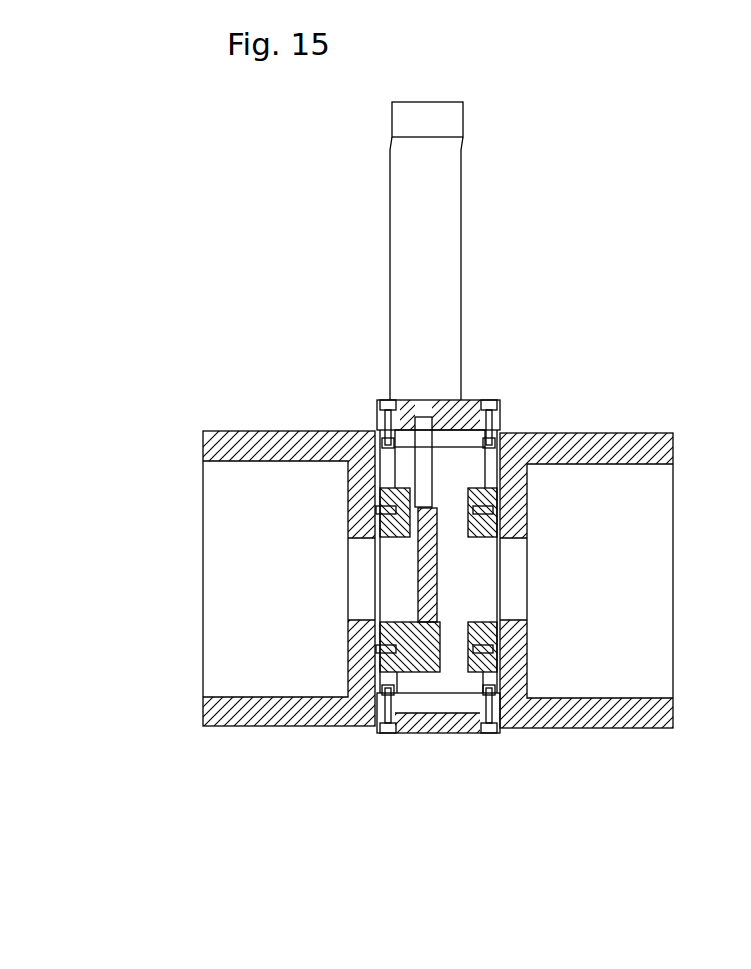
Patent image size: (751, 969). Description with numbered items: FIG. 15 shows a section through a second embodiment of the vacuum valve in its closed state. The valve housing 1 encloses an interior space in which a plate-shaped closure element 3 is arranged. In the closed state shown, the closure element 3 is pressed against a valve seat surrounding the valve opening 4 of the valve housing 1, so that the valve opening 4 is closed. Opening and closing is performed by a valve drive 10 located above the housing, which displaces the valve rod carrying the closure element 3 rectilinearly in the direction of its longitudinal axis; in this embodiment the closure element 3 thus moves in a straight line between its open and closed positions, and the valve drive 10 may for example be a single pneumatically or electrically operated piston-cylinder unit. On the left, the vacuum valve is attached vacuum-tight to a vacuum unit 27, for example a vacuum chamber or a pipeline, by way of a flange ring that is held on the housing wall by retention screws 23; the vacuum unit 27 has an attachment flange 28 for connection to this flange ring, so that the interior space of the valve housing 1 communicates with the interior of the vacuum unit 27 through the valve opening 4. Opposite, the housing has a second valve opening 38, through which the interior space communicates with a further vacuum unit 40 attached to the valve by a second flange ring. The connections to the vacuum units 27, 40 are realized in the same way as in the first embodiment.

The valve housing 1 is at (420, 752).
The closure element 3 is at (435, 535).
The valve opening 4 is at (390, 581).
The valve drive 10 is at (485, 262).
The retention screws 23 is at (487, 650).
The vacuum unit 27 is at (262, 733).
The attachment flange 28 is at (363, 512).
The second valve opening 38 is at (487, 581).
The further vacuum unit 40 is at (620, 733).